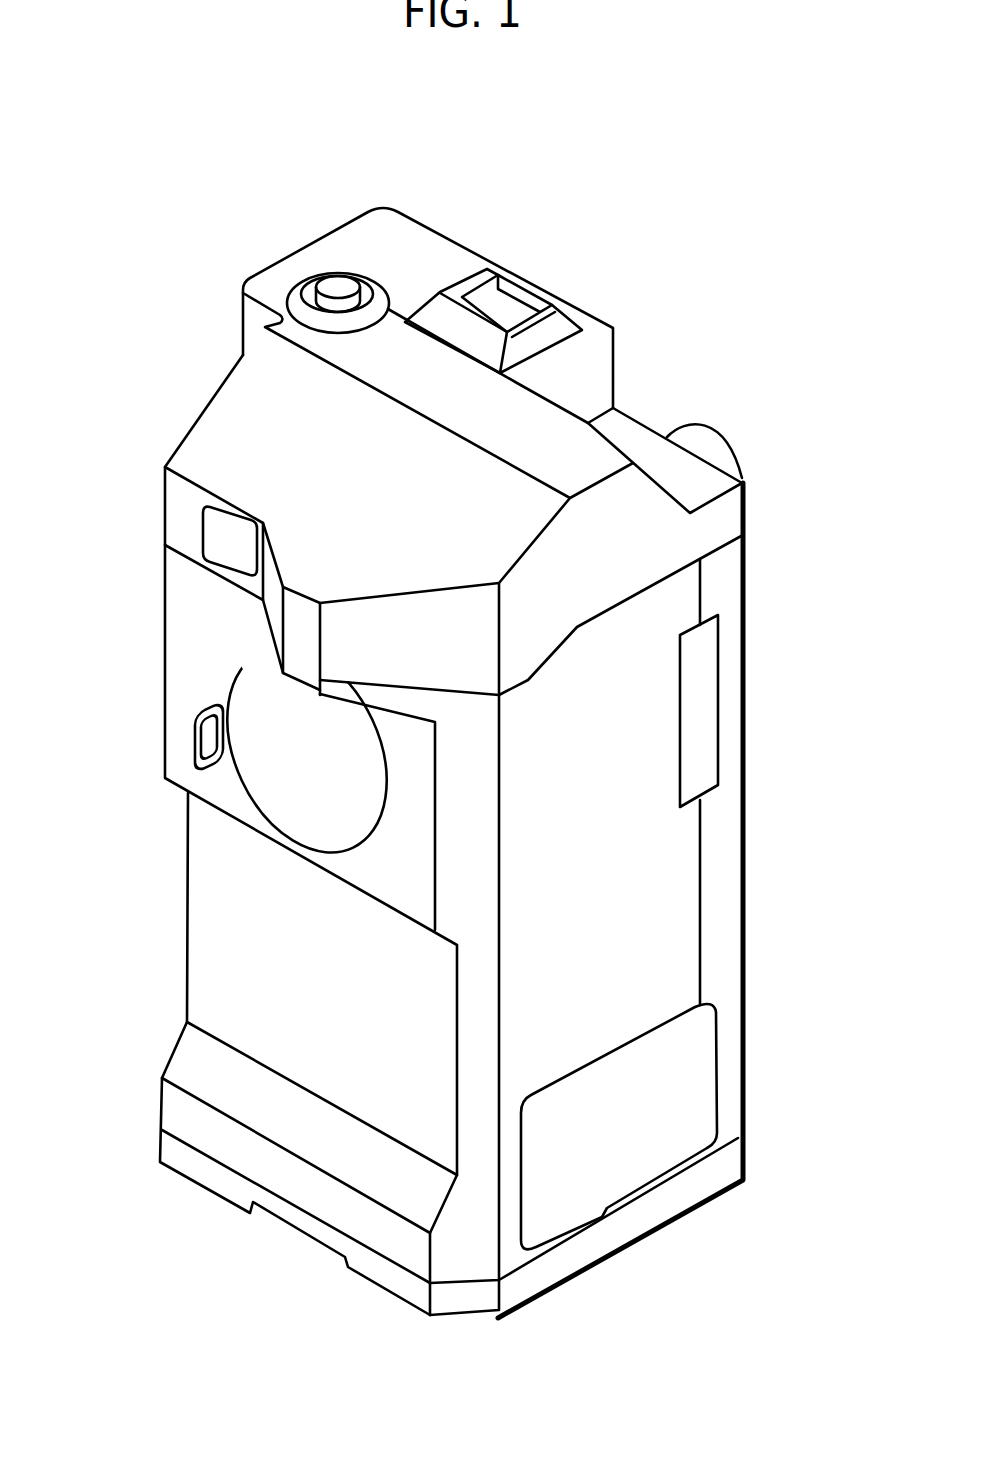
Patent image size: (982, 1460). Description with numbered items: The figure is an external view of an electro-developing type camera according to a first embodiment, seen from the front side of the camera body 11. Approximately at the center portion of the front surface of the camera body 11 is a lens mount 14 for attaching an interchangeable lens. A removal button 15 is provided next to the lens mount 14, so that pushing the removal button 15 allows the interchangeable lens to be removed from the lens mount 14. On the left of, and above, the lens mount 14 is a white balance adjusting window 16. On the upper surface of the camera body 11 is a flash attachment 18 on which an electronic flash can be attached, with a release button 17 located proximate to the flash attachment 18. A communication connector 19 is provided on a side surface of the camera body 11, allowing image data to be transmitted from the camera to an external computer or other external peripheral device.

The camera body 11 is at (193, 272).
The lens mount 14 is at (277, 788).
The removal button 15 is at (207, 738).
The white balance adjusting window 16 is at (215, 533).
The release button 17 is at (337, 287).
The flash attachment 18 is at (550, 327).
The communication connector 19 is at (700, 710).